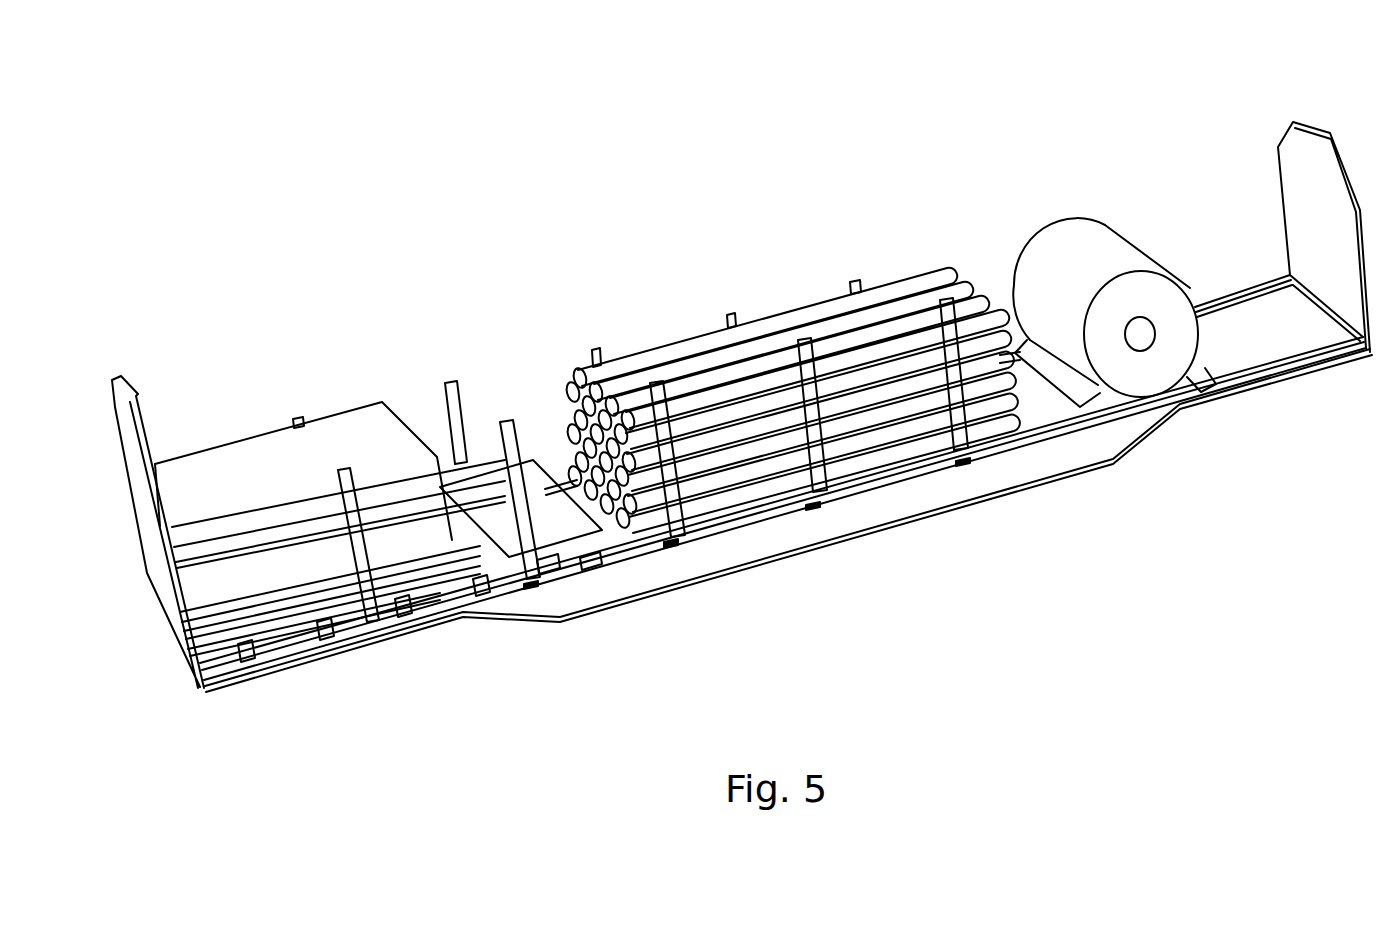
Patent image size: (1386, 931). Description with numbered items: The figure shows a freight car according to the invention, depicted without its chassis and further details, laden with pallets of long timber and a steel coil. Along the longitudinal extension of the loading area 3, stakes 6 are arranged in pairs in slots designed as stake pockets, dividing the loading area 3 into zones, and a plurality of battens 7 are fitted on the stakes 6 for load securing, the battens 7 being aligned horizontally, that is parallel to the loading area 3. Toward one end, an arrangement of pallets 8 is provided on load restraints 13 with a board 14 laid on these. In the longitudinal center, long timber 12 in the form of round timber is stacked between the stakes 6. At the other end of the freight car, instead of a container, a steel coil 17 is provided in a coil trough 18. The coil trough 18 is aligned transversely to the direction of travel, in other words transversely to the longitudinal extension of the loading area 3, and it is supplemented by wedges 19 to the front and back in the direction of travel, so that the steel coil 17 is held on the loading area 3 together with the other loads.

The loading area 3 is at (1280, 322).
The stakes 6 is at (456, 382).
The battens 7 is at (228, 604).
The pallets 8 is at (268, 470).
The long timber 12 is at (723, 383).
The load restraints 13 is at (323, 629).
The board 14 is at (560, 520).
The steel coil 17 is at (1090, 257).
The coil trough 18 is at (1146, 405).
The wedges 19 is at (1187, 377).